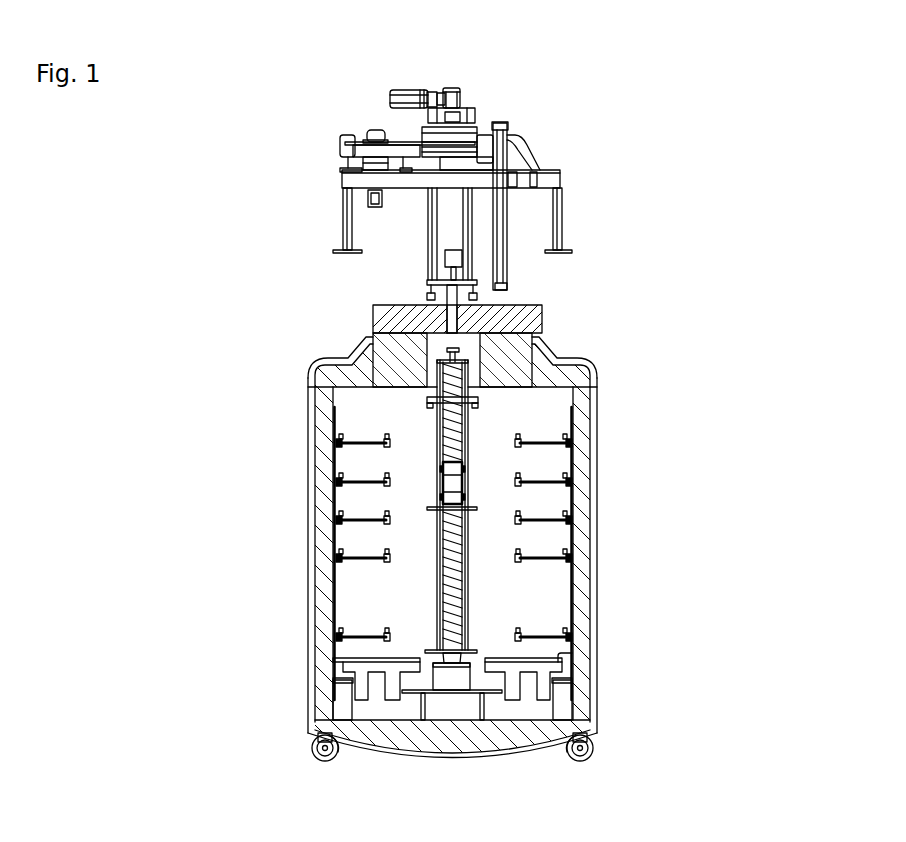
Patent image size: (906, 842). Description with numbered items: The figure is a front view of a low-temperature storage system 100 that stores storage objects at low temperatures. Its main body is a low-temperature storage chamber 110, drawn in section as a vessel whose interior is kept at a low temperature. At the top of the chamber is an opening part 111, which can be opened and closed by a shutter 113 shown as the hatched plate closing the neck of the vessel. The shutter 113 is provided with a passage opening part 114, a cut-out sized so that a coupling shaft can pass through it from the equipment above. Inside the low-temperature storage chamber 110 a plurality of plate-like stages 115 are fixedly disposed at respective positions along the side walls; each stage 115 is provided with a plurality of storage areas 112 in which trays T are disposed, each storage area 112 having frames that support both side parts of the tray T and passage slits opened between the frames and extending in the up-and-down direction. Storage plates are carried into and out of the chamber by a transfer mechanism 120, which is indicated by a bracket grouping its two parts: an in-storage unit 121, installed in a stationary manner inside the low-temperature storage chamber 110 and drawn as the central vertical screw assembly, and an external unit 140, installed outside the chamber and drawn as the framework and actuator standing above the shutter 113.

The low-temperature storage system 100 is at (256, 107).
The low-temperature storage chamber 110 is at (313, 433).
The opening part 111 is at (433, 348).
The storage area 112 is at (362, 520).
The shutter 113 is at (390, 320).
The passage opening part 114 is at (453, 315).
The plate-like stage 115 is at (333, 556).
The tray T is at (358, 482).
The transfer mechanism 120 is at (713, 242).
The in-storage unit 121 is at (467, 443).
The external unit 140 is at (532, 163).